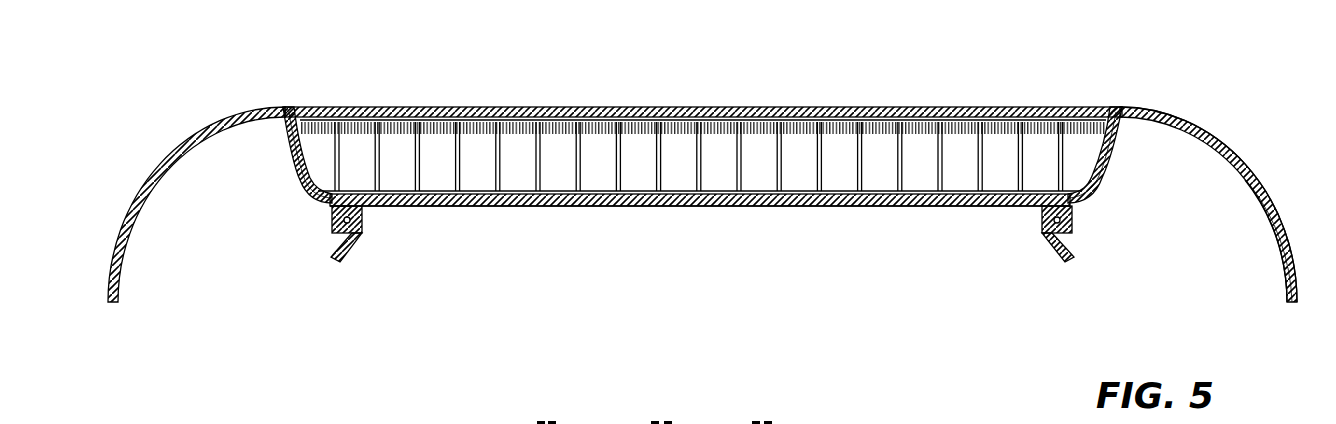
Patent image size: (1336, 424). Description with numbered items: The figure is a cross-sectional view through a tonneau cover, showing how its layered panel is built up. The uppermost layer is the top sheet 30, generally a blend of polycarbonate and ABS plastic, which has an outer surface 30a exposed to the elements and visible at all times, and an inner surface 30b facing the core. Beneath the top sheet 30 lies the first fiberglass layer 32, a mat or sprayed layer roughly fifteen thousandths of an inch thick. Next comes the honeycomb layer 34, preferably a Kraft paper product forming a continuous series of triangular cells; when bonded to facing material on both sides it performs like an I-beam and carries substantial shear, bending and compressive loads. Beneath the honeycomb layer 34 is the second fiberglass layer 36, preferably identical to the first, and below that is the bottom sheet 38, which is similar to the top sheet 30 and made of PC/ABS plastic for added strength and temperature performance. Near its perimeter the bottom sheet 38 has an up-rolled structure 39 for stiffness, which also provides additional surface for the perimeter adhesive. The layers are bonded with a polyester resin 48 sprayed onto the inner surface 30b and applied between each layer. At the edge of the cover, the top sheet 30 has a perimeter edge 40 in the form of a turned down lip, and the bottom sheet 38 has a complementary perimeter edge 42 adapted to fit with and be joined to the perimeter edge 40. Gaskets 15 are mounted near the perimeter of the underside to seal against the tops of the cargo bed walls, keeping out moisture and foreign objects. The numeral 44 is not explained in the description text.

The gasket 15 is at (333, 259).
The top sheet 30 is at (735, 154).
The outer surface 30a is at (580, 108).
The inner surface 30b is at (560, 117).
The first fiberglass layer 32 is at (944, 112).
The honeycomb layer 34 is at (700, 168).
The second fiberglass layer 36 is at (927, 200).
The bottom sheet 38 is at (837, 205).
The up-rolled structure 39 is at (1100, 173).
The perimeter edge 40 is at (1290, 267).
The complementary perimeter edge 42 is at (1263, 248).
The arcuate cover 44 is at (1233, 153).
The polyester resin 48 is at (153, 183).